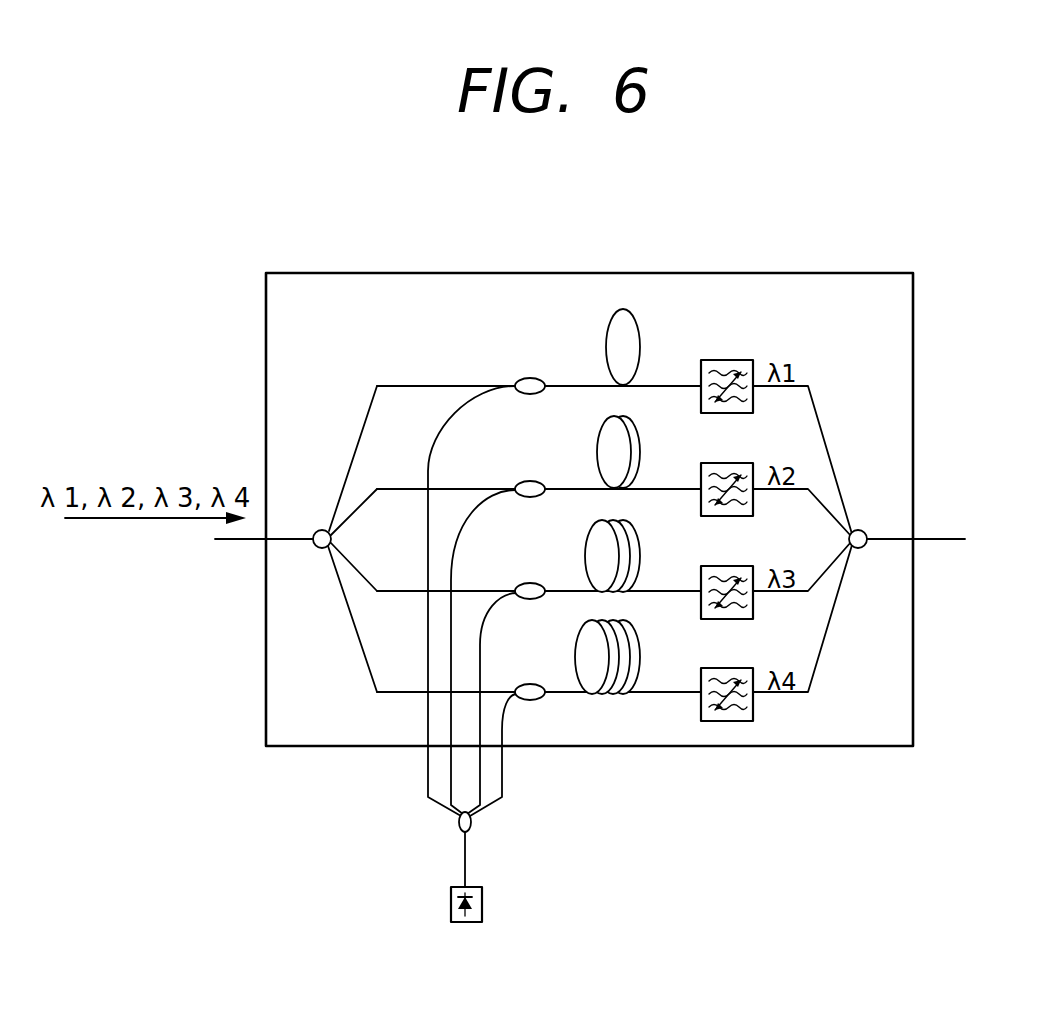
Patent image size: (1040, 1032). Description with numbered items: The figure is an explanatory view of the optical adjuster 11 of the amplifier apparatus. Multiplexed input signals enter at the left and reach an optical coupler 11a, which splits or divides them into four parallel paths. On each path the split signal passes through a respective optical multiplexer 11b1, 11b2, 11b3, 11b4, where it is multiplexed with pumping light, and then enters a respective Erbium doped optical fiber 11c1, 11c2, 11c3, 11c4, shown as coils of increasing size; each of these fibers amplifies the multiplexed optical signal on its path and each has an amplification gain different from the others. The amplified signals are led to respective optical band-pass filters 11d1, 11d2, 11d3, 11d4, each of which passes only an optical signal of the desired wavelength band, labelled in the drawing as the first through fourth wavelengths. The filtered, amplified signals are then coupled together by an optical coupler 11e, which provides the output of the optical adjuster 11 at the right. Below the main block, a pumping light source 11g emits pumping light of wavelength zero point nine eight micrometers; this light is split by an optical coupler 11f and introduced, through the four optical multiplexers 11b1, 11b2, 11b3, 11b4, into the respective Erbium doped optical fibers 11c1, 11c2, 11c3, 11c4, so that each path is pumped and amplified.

The optical adjuster 11 is at (403, 273).
The optical coupler 11a is at (313, 547).
The optical multiplexer 11b1 is at (532, 378).
The optical multiplexer 11b2 is at (532, 481).
The optical multiplexer 11b3 is at (532, 583).
The optical multiplexer 11b4 is at (532, 684).
The Erbium doped optical fiber 11c1 is at (641, 337).
The Erbium doped optical fiber 11c2 is at (643, 448).
The Erbium doped optical fiber 11c3 is at (642, 553).
The Erbium doped optical fiber 11c4 is at (643, 657).
The optical band-pass filter 11d1 is at (738, 361).
The optical band-pass filter 11d2 is at (738, 464).
The optical band-pass filter 11d3 is at (738, 567).
The optical band-pass filter 11d4 is at (738, 669).
The optical coupler 11e is at (866, 530).
The optical coupler 11f is at (456, 836).
The pumping light source 11g is at (482, 902).